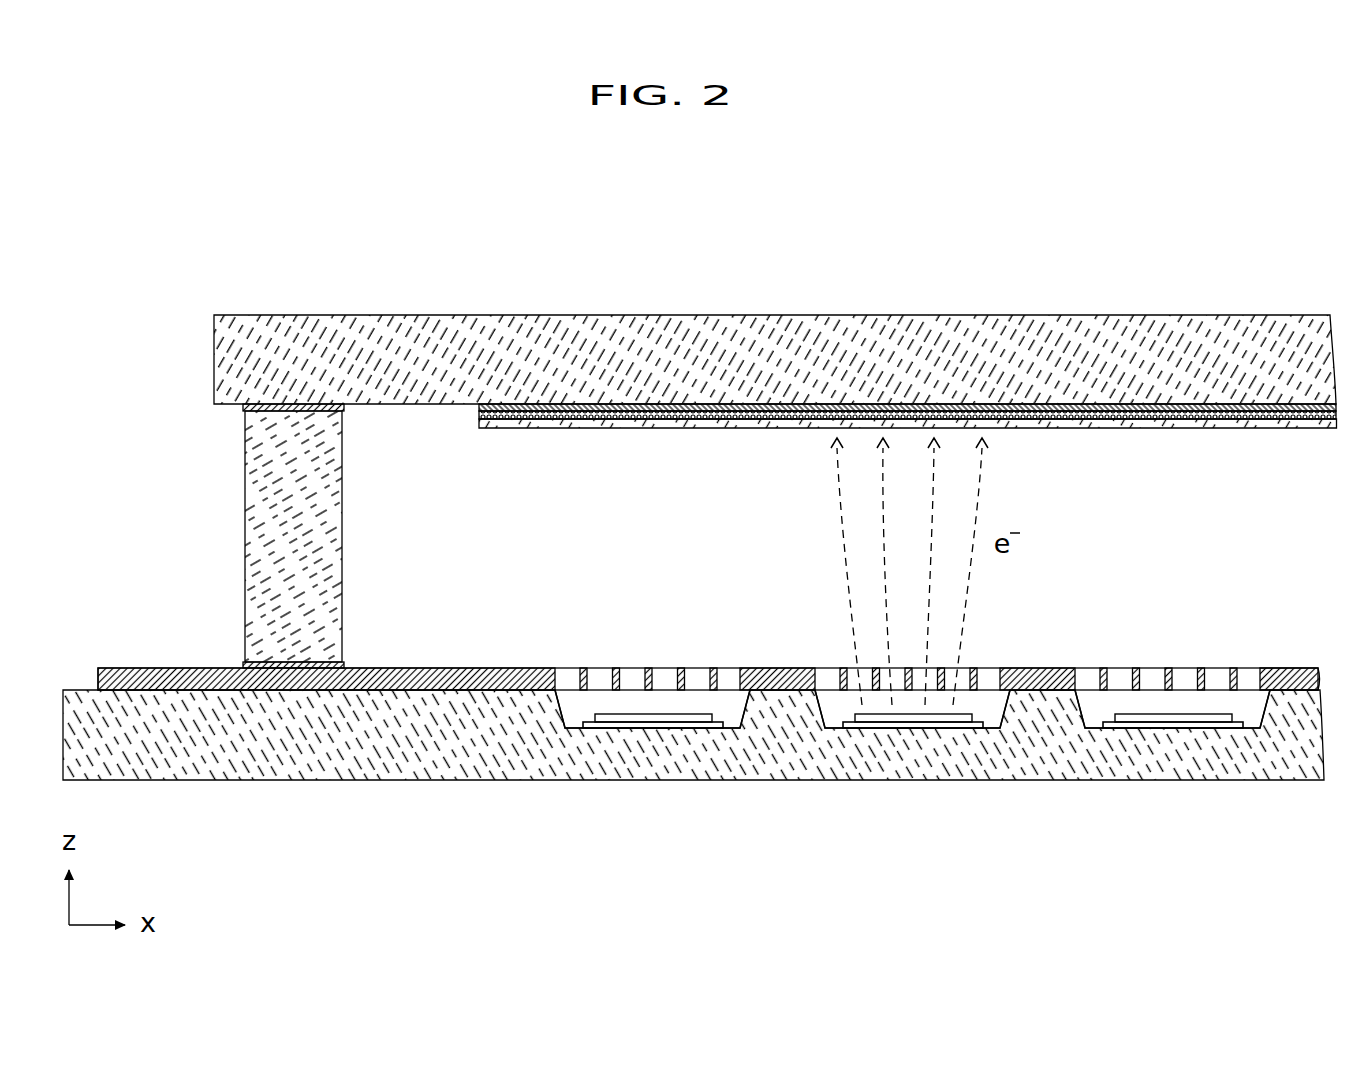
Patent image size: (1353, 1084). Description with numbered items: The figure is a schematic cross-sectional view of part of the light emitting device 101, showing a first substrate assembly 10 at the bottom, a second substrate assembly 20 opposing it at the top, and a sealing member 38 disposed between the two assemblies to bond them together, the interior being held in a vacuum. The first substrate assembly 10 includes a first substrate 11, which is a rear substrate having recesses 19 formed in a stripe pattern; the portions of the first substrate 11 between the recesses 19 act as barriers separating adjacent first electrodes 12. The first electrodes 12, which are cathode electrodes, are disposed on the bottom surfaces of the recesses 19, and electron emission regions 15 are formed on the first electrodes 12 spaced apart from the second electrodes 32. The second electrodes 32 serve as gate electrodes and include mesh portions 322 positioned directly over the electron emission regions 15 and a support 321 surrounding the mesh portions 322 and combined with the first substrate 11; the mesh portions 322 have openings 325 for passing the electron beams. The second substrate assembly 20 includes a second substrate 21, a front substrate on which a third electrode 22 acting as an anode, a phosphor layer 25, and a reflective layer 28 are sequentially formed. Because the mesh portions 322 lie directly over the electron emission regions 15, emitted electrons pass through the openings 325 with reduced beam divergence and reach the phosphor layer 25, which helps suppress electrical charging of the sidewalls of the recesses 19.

The light emitting device 101 is at (738, 207).
The second substrate assembly 20 is at (775, 314).
The second substrate 21 is at (905, 333).
The third electrode 22 is at (541, 407).
The phosphor layer 25 is at (596, 414).
The reflective layer 28 is at (651, 422).
The sealing member 38 is at (268, 519).
The first substrate assembly 10 is at (693, 789).
The first substrate 11 is at (463, 765).
The second electrodes 32 is at (709, 763).
The support 321 is at (790, 692).
The mesh portions 322 is at (1201, 686).
The openings 325 is at (1146, 686).
The recesses 19 is at (742, 730).
The first electrodes 12 is at (678, 729).
The electron emission regions 15 is at (620, 722).